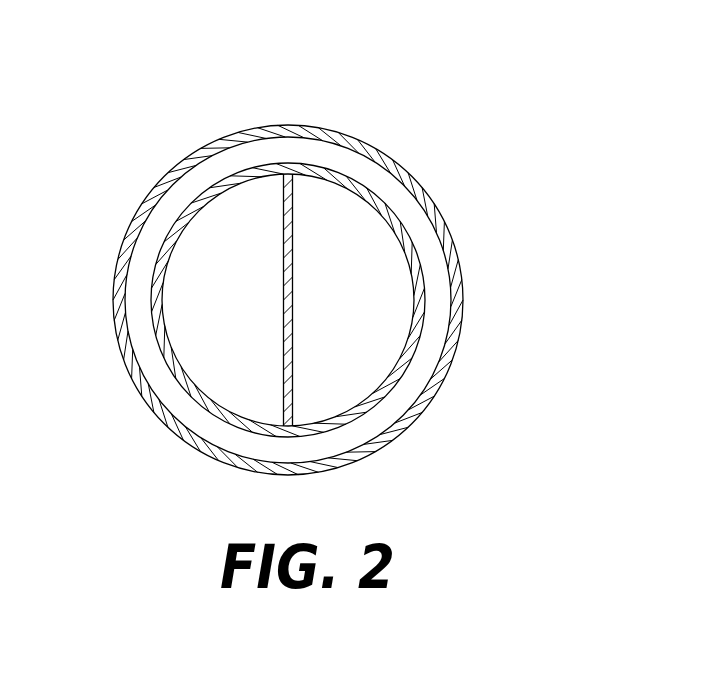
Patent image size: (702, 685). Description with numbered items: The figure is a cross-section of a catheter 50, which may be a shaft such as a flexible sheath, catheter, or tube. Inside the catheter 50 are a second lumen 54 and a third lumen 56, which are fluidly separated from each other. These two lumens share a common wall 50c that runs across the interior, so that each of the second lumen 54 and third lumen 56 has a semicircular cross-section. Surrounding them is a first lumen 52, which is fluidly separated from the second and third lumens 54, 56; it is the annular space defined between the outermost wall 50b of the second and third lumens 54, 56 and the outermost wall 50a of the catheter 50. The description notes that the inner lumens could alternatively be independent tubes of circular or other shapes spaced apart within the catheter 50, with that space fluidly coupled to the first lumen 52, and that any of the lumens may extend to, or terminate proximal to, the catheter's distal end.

The catheter 50 is at (325, 110).
The outermost wall of catheter 50a is at (250, 132).
The outermost wall of second and third lumens 50b is at (387, 195).
The common wall 50c is at (292, 411).
The first lumen 52 is at (412, 390).
The second lumen 54 is at (175, 268).
The third lumen 56 is at (398, 283).